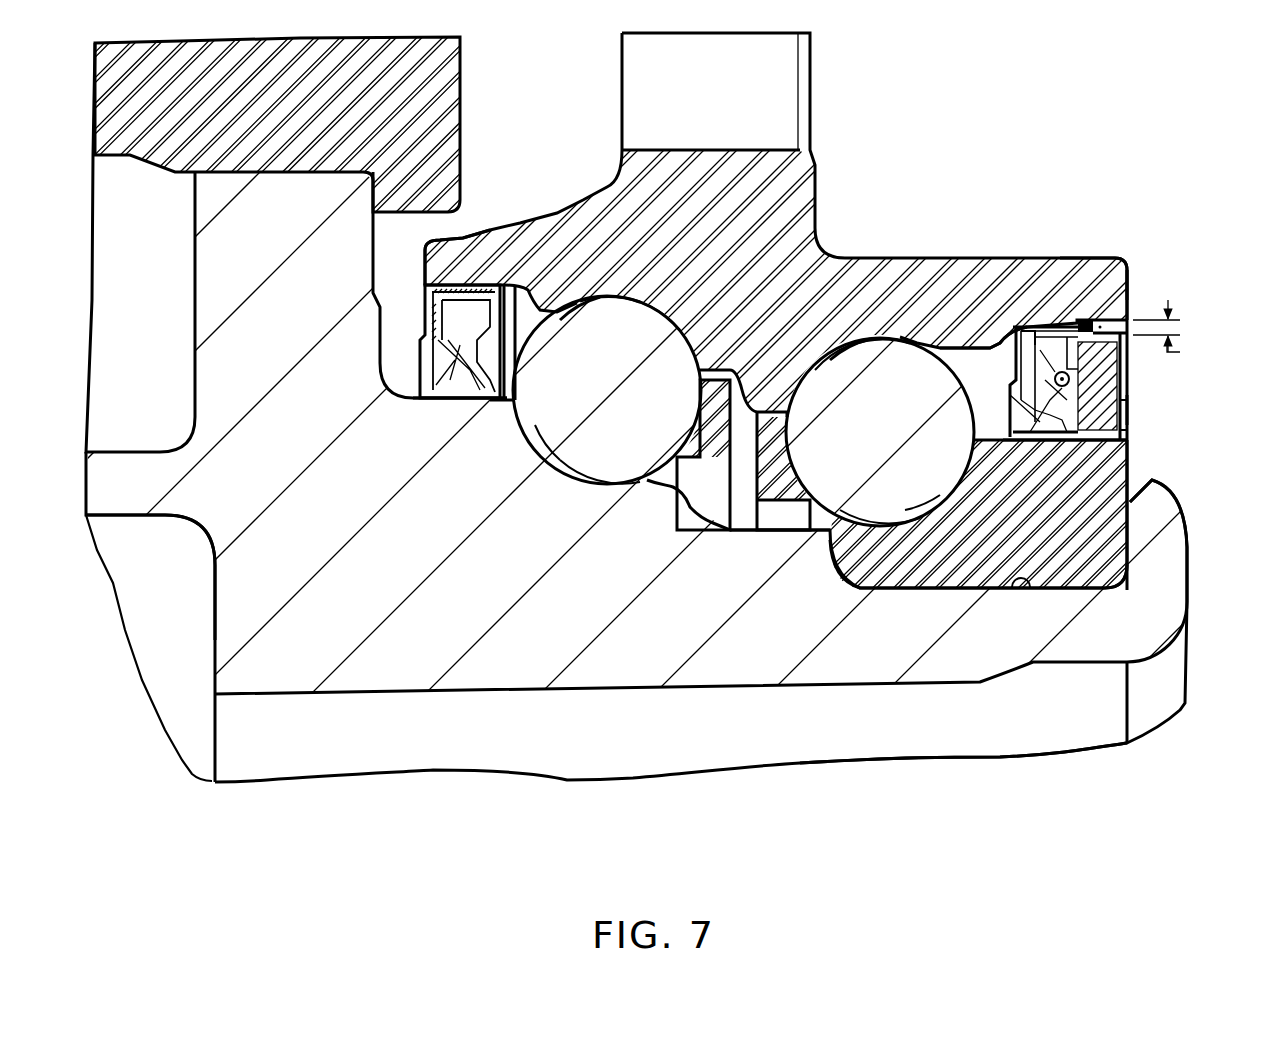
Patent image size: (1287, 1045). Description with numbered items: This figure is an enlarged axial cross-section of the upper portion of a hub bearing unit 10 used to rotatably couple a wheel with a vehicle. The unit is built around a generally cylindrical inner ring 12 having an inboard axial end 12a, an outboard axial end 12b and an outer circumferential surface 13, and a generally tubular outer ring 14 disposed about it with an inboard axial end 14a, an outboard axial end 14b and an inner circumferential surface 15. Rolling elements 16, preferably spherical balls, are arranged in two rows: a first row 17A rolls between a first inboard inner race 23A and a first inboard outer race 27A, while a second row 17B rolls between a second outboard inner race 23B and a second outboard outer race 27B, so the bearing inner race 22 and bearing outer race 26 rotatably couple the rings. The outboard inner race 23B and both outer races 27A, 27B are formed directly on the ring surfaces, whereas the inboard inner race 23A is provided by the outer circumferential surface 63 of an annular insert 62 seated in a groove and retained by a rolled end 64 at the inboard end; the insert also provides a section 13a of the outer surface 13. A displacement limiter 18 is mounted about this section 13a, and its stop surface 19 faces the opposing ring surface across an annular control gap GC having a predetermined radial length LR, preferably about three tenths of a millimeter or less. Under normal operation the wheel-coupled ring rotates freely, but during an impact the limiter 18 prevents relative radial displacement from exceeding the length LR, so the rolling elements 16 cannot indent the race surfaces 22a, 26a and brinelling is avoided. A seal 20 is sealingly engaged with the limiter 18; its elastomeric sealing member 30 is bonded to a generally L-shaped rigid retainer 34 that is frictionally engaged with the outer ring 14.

The hub bearing unit 10 is at (1068, 92).
The inner ring 12 is at (477, 740).
The inboard axial end 12a is at (1170, 567).
The outboard axial end 12b is at (212, 598).
The outer circumferential surface 13 is at (700, 530).
The section of the ring outer surface 13a is at (1130, 427).
The outer ring 14 is at (850, 200).
The inboard axial end 14a is at (1113, 273).
The outboard axial end 14b is at (463, 253).
The inner circumferential surface 15 is at (985, 350).
The rolling elements 16 is at (628, 467).
The first row of rolling elements 17A is at (817, 455).
The second row of rolling elements 17B is at (553, 400).
The displacement limiter 18 is at (1130, 393).
The stop surface 19 is at (1133, 293).
The seal 20 is at (1150, 410).
The bearing inner race 22 is at (541, 437).
The outer surface of the inner race 22a is at (590, 443).
The first inboard inner race 23A is at (907, 500).
The second outboard inner race 23B is at (605, 477).
The bearing outer race 26 is at (572, 312).
The outer surface of the outer race 26a is at (660, 323).
The first inboard outer race 27A is at (908, 330).
The second outboard outer race 27B is at (622, 310).
The sealing member 30 is at (1035, 360).
The rigid retainer 34 is at (1045, 313).
The annular insert 62 is at (1100, 487).
The outer circumferential surface of the insert 63 is at (993, 430).
The annular groove / rolled end 64 is at (1157, 513).
The control gap GC is at (1100, 324).
The radial length LR is at (1187, 352).